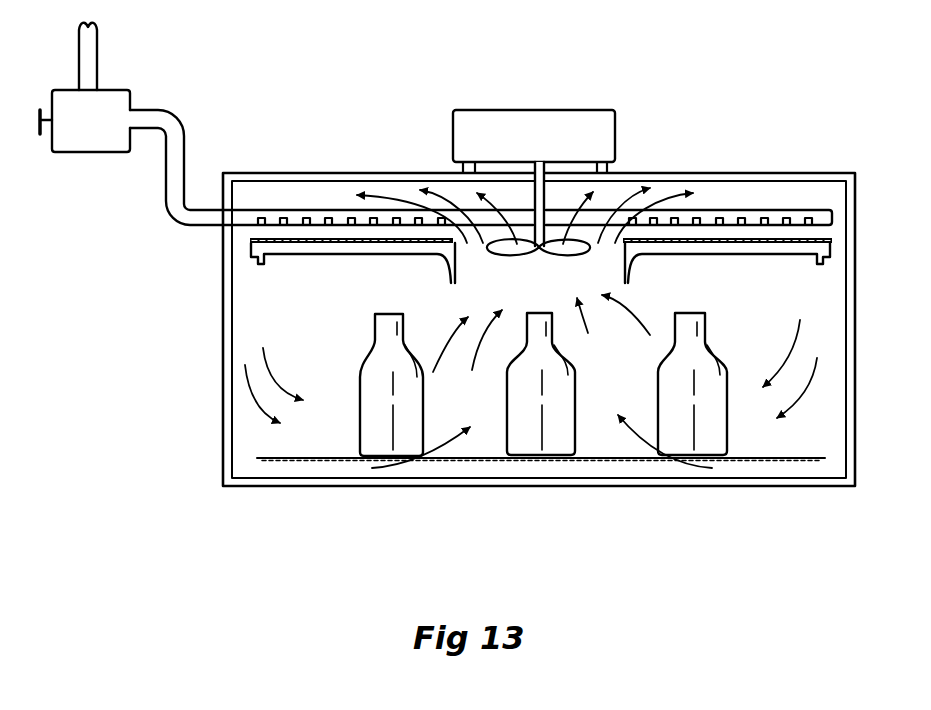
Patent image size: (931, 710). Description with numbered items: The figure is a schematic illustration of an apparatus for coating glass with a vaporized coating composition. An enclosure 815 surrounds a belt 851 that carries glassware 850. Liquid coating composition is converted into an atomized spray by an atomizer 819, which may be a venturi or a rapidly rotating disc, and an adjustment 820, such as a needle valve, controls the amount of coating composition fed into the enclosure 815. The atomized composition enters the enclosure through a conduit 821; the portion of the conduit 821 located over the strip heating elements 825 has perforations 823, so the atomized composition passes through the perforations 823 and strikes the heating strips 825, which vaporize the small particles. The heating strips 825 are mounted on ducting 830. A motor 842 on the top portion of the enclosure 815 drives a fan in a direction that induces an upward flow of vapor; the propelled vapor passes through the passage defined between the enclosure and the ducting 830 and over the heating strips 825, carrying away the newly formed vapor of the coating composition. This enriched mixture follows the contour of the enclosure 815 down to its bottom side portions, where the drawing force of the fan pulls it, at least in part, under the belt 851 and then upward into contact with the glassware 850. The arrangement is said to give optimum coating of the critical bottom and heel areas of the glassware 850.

The enclosure 815 is at (227, 486).
The atomizer 819 is at (112, 100).
The adjustment 820 is at (42, 138).
The conduit 821 is at (175, 155).
The perforations 823 is at (262, 228).
The strip heating elements 825 is at (321, 238).
The ducting 830 is at (257, 262).
The motor 842 is at (544, 120).
The glassware 850 is at (383, 447).
The belt 851 is at (607, 461).